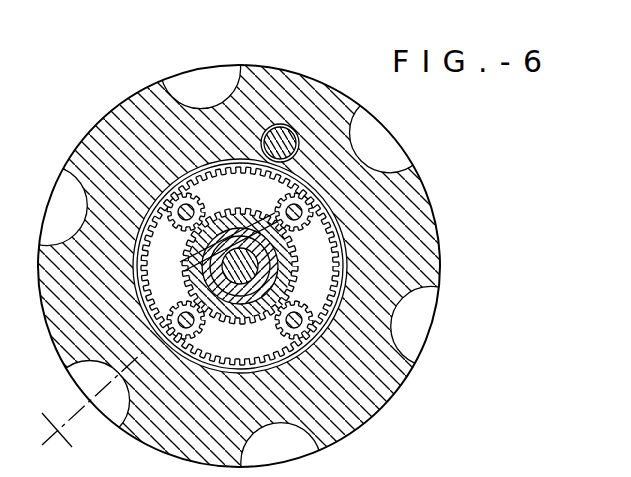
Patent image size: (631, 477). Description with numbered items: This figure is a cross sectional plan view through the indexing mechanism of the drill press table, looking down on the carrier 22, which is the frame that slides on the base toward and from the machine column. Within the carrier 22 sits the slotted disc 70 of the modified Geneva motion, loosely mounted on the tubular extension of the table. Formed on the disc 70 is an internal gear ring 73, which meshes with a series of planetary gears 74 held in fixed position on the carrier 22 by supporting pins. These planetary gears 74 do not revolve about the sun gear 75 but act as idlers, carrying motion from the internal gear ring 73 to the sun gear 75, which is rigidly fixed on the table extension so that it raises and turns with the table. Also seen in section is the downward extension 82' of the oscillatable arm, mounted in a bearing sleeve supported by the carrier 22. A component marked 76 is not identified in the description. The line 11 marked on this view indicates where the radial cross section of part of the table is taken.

The section line 11- 11 is at (49, 420).
The carrier 22 is at (418, 215).
The slotted disc 70 is at (347, 277).
The internal gear ring 73 is at (332, 243).
The planetary gears 74 is at (281, 215).
The sun gear 75 is at (296, 261).
The carrier 76 is at (184, 265).
The downward extension of the arm 82' is at (306, 113).